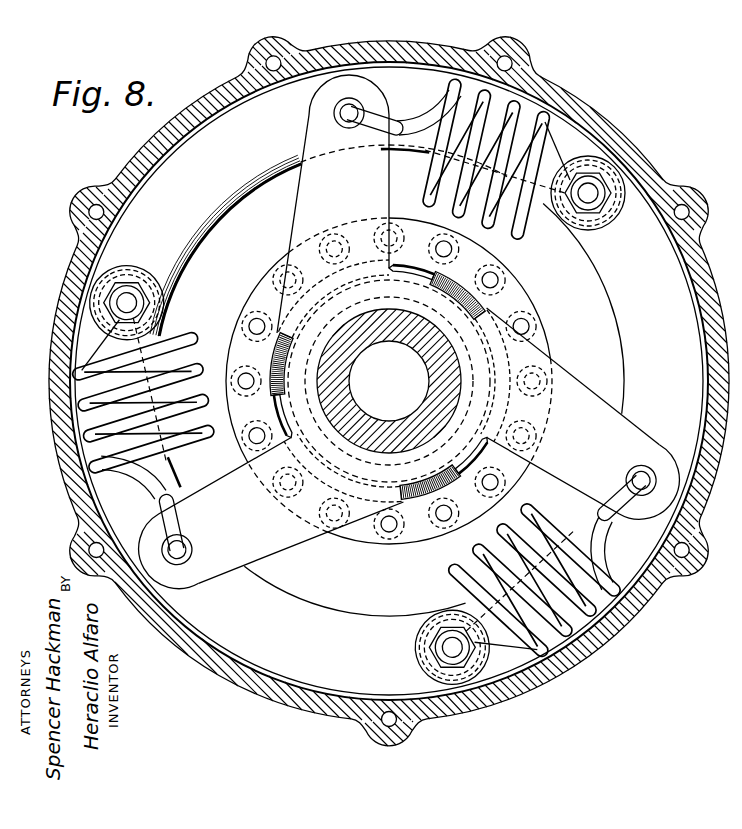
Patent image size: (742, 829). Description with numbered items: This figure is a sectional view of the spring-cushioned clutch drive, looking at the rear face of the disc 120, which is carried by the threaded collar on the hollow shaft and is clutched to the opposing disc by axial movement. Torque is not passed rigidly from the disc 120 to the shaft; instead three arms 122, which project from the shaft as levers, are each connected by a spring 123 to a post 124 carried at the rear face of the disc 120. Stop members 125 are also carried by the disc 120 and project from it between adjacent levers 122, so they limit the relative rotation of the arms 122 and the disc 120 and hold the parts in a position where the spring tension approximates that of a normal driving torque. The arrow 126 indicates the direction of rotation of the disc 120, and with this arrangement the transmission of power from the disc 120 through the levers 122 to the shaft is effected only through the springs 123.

The disc 120 is at (389, 391).
The arms 122 is at (297, 230).
The springs 123 is at (192, 343).
The posts 124 is at (128, 303).
The stop members 125 is at (403, 268).
The arrow 126 is at (220, 163).